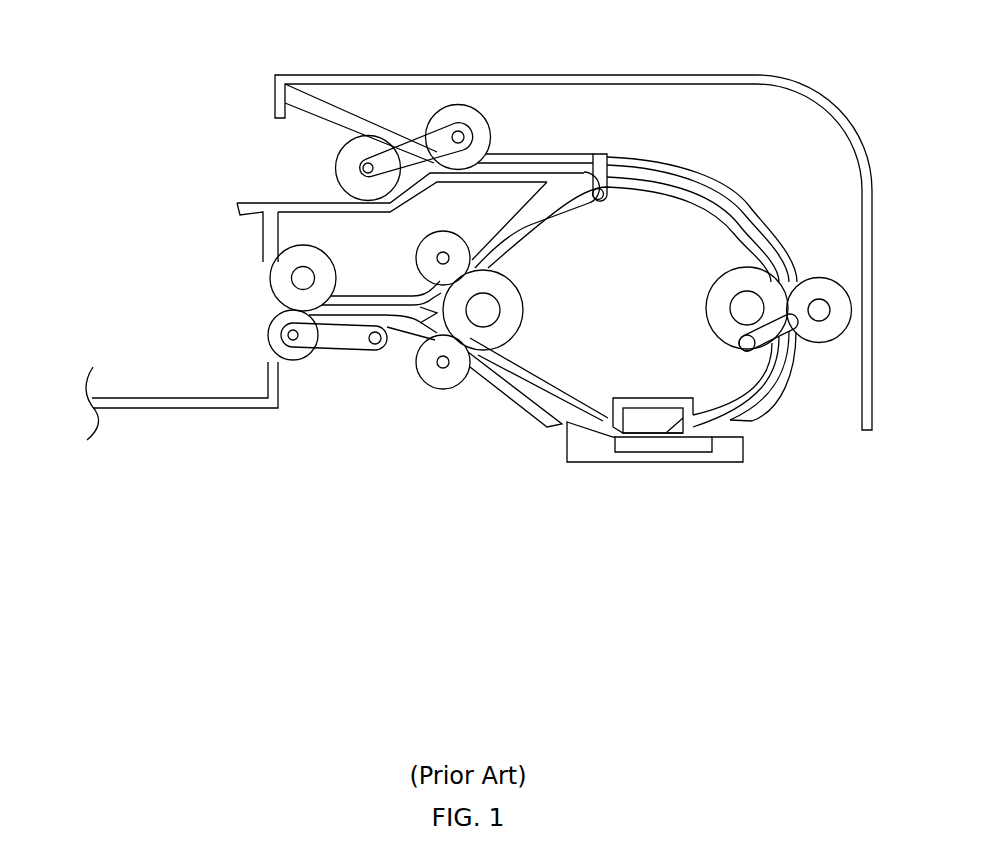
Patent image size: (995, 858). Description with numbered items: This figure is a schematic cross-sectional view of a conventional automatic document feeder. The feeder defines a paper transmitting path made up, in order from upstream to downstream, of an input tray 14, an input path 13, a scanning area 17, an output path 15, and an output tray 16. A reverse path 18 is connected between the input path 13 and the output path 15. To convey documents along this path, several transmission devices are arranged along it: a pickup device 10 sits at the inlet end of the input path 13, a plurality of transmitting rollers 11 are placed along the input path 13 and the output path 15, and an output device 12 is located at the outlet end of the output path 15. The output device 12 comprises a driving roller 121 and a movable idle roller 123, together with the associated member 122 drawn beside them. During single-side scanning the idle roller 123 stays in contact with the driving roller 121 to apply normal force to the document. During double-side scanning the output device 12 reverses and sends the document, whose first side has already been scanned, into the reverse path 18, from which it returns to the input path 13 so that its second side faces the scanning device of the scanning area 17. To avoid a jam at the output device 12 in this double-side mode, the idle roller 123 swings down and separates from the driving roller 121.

The pickup device 10 is at (377, 160).
The transmitting rollers 11 is at (772, 297).
The output device 12 is at (269, 329).
The driving roller 121 is at (280, 279).
The pickup arm 122 is at (337, 341).
The idle roller 123 is at (270, 341).
The input path 13 is at (617, 170).
The input tray 14 is at (287, 198).
The output path 15 is at (412, 312).
The output tray 16 is at (197, 398).
The scanning area 17 is at (672, 436).
The reverse path 18 is at (500, 237).